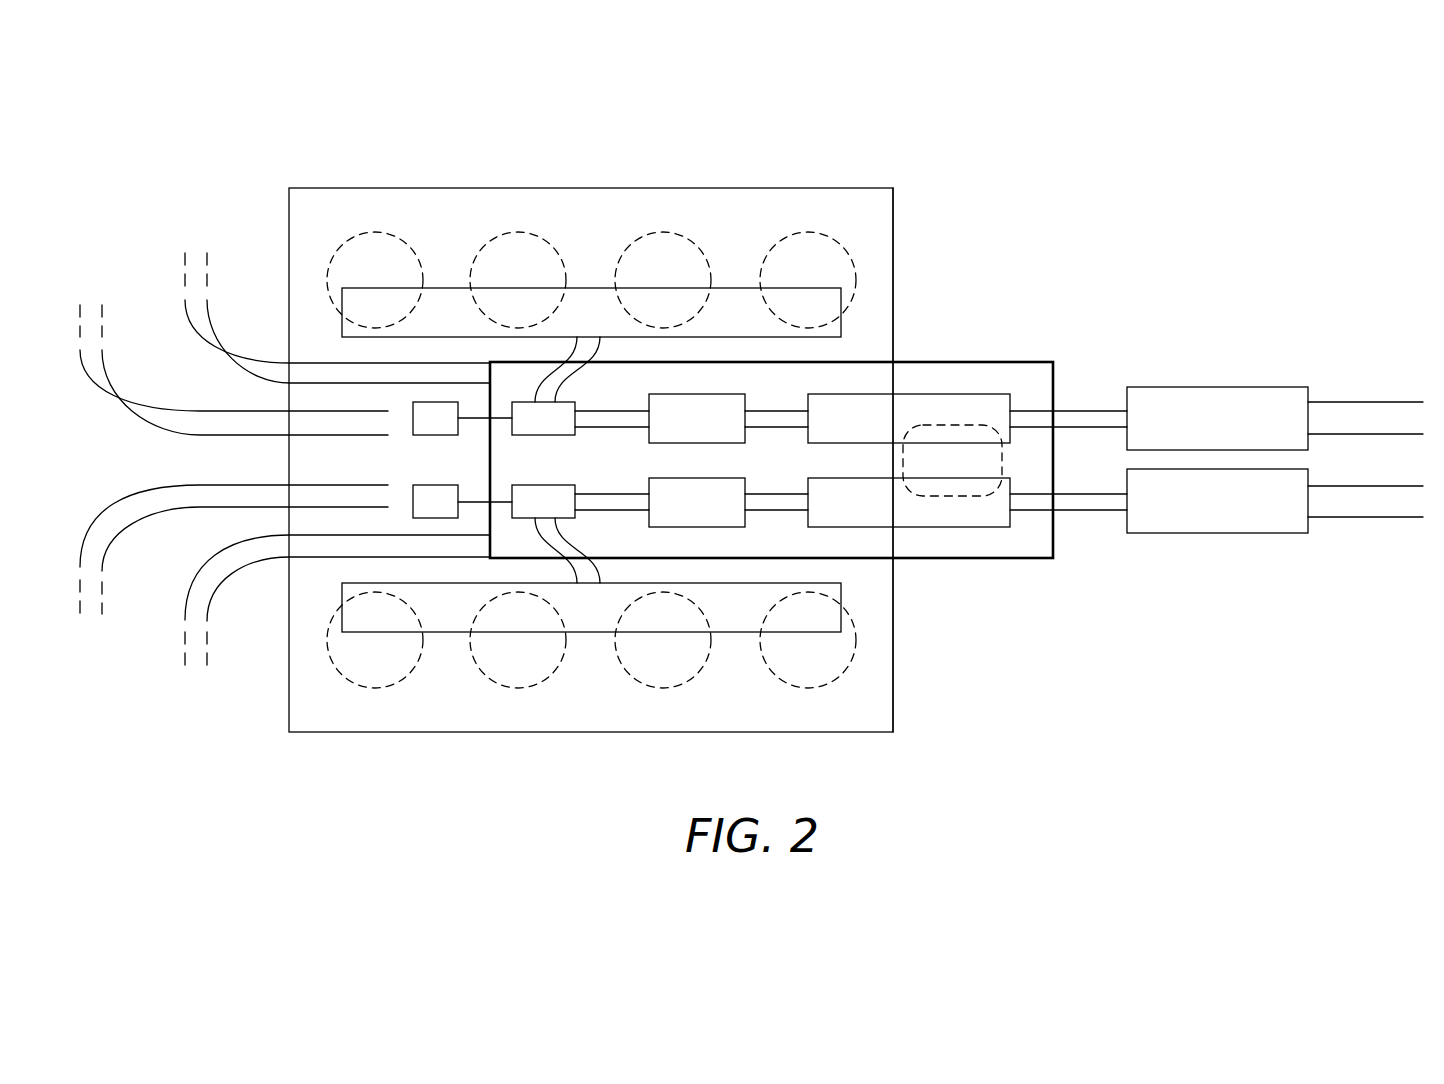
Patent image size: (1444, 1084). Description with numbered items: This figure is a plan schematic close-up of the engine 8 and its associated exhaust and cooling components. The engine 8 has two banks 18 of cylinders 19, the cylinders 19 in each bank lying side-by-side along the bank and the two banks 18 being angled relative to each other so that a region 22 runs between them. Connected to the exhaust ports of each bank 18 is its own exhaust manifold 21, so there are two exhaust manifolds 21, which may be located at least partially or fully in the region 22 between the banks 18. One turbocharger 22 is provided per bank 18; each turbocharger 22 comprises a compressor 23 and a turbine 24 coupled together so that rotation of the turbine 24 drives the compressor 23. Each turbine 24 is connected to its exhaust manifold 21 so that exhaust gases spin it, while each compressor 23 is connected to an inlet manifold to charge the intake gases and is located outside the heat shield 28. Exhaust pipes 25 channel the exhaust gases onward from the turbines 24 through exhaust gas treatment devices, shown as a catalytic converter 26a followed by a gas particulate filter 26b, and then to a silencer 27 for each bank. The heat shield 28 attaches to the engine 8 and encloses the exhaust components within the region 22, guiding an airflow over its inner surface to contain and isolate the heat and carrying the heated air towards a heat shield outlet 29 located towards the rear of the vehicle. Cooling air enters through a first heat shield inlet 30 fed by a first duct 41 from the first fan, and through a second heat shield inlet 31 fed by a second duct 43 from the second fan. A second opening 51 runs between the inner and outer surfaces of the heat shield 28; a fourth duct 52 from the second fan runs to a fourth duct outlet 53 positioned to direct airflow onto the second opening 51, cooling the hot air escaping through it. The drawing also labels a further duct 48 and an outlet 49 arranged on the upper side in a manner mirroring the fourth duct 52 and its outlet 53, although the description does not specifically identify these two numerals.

The engine 8 is at (895, 196).
The bank of cylinders 18 is at (313, 204).
The cylinder 19 is at (378, 256).
The exhaust manifold 21 is at (590, 287).
The turbocharger 22 is at (484, 406).
The compressor 23 is at (423, 430).
The turbine 24 is at (531, 430).
The exhaust pipe 25 is at (1090, 410).
The catalytic converter 26a is at (677, 430).
The gas particulate filter 26b is at (975, 393).
The silencer 27 is at (1280, 387).
The heat shield 28 is at (1040, 362).
The heat shield outlet 29 is at (1002, 448).
The first heat shield inlet 30 is at (485, 375).
The second heat shield inlet 31 is at (485, 543).
The first duct 41 is at (225, 343).
The second duct 43 is at (225, 578).
The first outlet 48 is at (118, 389).
The first junction 49 is at (372, 422).
The second opening 51 is at (484, 457).
The fourth duct 52 is at (118, 537).
The fourth duct outlet 53 is at (372, 498).